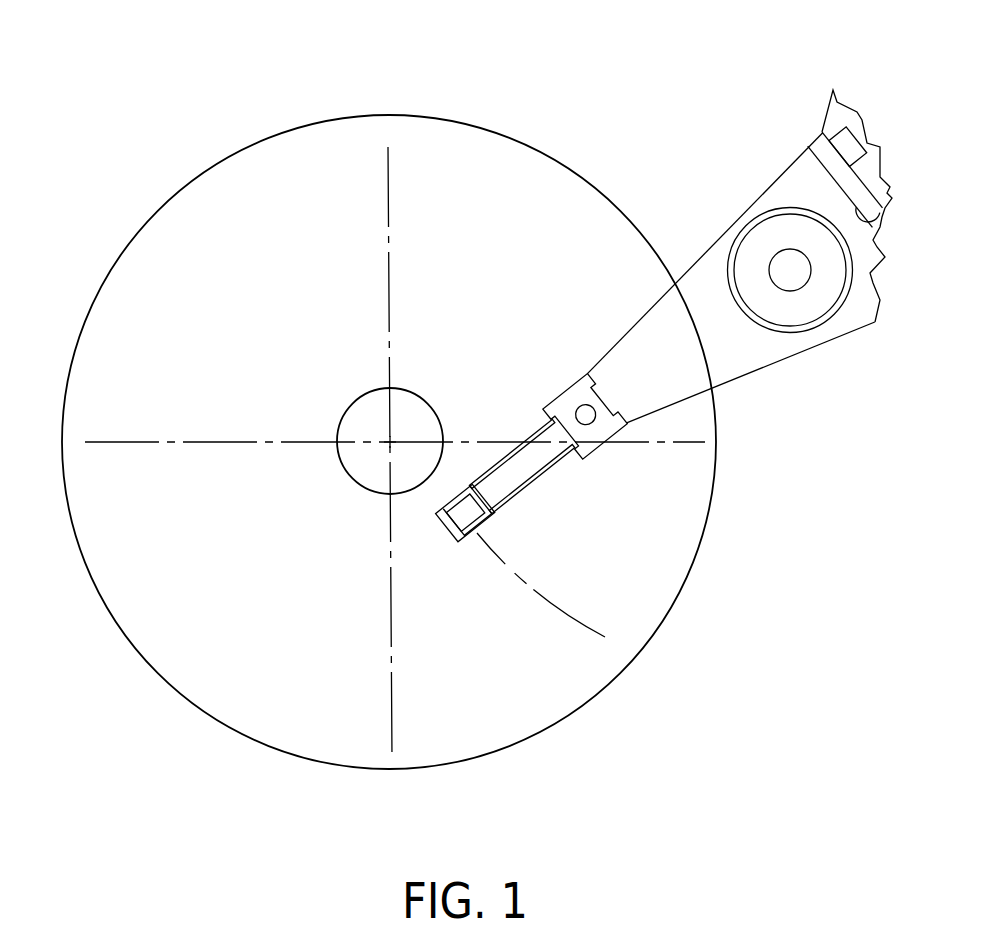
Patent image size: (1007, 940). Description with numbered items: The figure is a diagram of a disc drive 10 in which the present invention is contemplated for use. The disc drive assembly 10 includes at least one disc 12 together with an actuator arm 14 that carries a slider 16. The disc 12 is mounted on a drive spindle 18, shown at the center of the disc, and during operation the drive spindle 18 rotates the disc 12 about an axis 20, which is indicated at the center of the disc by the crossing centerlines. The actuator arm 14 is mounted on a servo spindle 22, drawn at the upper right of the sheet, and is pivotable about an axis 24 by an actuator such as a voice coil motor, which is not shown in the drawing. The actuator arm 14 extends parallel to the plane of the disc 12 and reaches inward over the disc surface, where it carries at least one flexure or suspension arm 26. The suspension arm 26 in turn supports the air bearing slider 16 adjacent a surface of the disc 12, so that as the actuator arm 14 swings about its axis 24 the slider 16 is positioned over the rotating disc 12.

The disc drive 10 is at (514, 113).
The disc 12 is at (124, 218).
The actuator arm 14 is at (723, 360).
The slider 16 is at (452, 520).
The drive spindle 18 is at (365, 412).
The axis 20 is at (388, 443).
The servo spindle 22 is at (788, 315).
The axis 24 is at (793, 270).
The suspension arm 26 is at (525, 460).